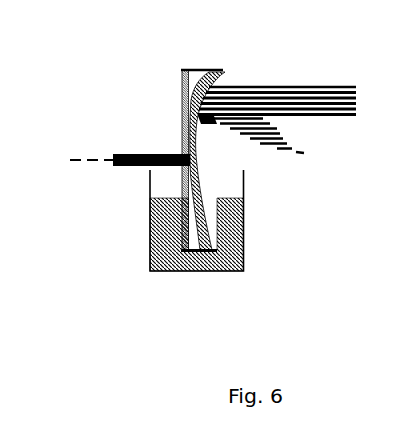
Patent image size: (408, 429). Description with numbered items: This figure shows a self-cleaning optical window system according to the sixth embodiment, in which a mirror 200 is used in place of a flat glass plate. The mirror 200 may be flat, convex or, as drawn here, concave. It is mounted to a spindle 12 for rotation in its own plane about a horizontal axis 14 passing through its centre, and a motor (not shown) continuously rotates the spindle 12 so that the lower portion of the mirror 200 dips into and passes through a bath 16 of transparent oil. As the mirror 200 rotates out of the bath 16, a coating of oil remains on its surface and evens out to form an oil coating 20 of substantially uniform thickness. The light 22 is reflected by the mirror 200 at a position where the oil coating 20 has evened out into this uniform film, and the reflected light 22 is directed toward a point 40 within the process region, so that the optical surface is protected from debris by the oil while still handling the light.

The mirror 200 is at (199, 72).
The oil coating 20 is at (219, 77).
The light 22 is at (319, 86).
The point 40 is at (311, 157).
The spindle 12 is at (191, 159).
The horizontal axis 14 is at (72, 161).
The bath 16 is at (213, 260).